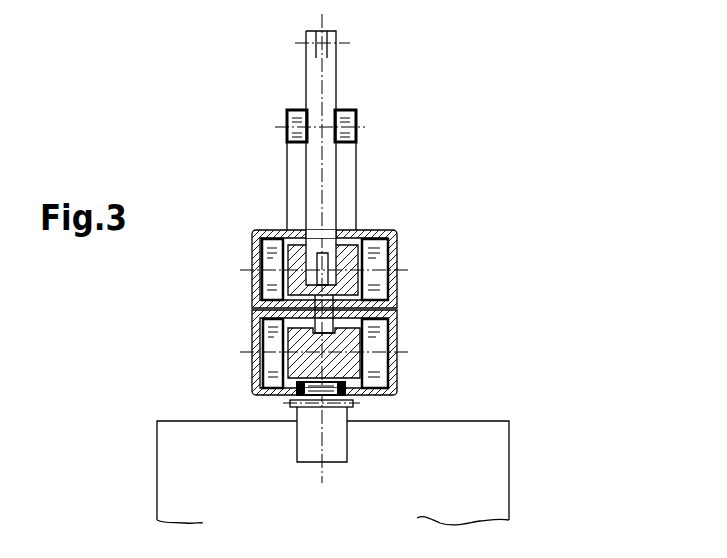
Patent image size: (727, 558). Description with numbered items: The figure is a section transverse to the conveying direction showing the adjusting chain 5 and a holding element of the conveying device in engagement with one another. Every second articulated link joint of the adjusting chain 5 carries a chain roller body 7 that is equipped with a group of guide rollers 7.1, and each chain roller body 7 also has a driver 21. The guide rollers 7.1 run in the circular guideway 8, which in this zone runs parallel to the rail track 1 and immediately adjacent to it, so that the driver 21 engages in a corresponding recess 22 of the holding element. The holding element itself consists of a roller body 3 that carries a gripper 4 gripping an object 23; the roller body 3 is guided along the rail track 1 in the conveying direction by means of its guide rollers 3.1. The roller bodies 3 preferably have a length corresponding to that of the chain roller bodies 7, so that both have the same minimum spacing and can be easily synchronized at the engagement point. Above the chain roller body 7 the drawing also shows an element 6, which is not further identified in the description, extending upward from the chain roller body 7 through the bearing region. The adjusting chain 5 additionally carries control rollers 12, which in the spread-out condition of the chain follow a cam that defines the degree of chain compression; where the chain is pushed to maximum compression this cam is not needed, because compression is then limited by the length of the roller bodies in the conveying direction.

The rail track 1 is at (397, 340).
The roller body 3 is at (397, 373).
The guide rollers 3.1 is at (275, 380).
The gripper 4 is at (330, 445).
The adjusting chain 5 is at (266, 85).
The shaft 6 is at (323, 73).
The chain roller body 7 is at (350, 245).
The guide rollers 7.1 is at (372, 237).
The circular guideway 8 is at (395, 258).
The control rollers 12 is at (342, 112).
The driver 21 is at (333, 304).
The recess 22 is at (297, 348).
The object 23 is at (260, 495).